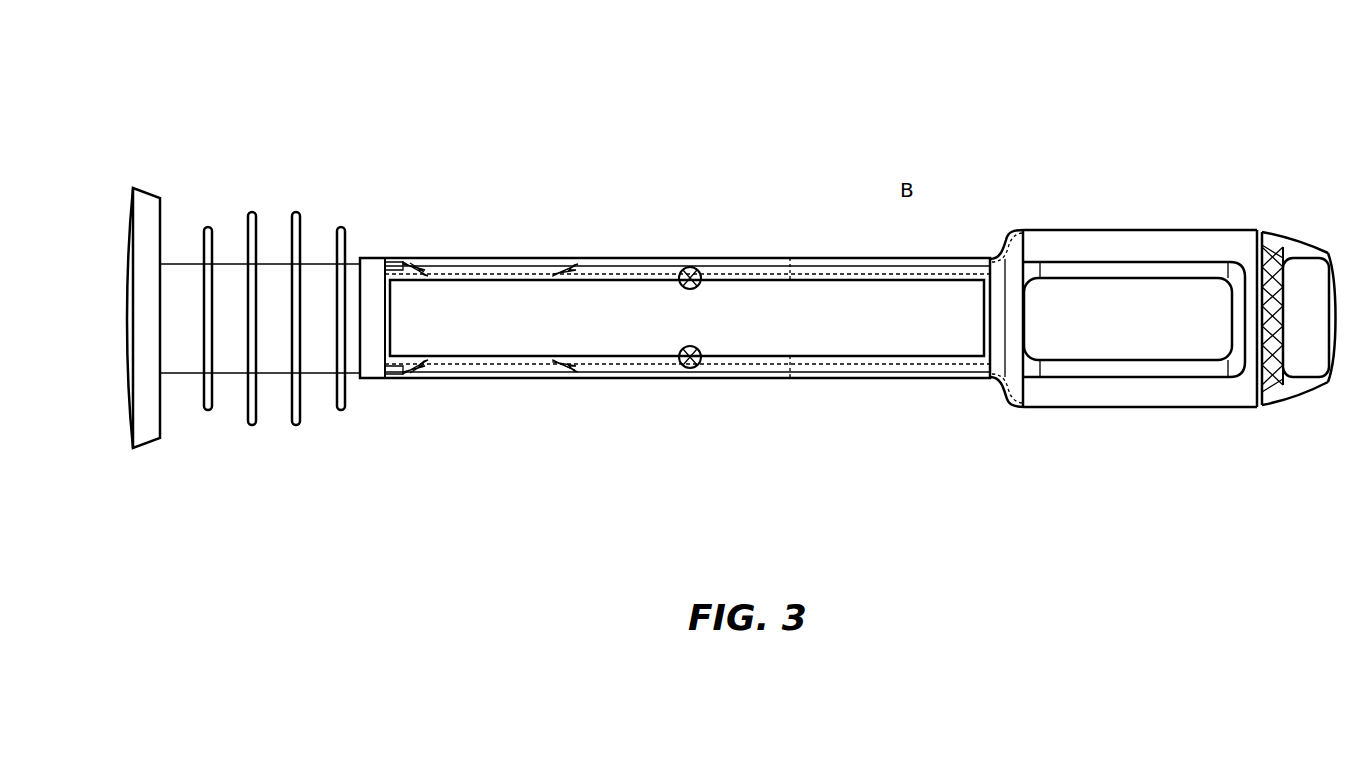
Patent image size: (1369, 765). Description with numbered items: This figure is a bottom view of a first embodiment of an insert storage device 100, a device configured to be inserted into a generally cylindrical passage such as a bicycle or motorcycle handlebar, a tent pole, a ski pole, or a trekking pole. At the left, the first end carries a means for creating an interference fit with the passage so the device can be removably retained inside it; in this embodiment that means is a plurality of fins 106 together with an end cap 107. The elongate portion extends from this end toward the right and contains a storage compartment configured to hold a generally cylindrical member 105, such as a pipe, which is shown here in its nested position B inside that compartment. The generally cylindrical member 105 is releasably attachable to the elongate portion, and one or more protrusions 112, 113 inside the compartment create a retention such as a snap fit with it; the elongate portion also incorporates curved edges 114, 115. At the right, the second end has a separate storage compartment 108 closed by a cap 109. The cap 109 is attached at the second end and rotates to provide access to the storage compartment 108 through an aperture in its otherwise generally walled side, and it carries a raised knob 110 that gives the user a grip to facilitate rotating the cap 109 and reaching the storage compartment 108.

The insert storage device 100 is at (108, 114).
The generally cylindrical member 105 is at (875, 330).
The fins 106 is at (209, 408).
The end cap 107 is at (147, 410).
The storage compartment 108 is at (1140, 330).
The cap 109 is at (1140, 250).
The raised knob 110 is at (1320, 250).
The protrusion 112 is at (693, 363).
The protrusion 113 is at (693, 270).
The curved edge 114 is at (500, 365).
The curved edge 115 is at (500, 272).